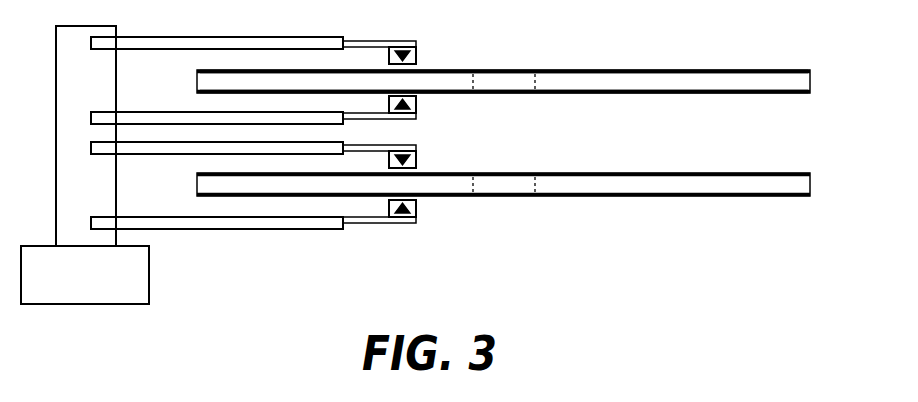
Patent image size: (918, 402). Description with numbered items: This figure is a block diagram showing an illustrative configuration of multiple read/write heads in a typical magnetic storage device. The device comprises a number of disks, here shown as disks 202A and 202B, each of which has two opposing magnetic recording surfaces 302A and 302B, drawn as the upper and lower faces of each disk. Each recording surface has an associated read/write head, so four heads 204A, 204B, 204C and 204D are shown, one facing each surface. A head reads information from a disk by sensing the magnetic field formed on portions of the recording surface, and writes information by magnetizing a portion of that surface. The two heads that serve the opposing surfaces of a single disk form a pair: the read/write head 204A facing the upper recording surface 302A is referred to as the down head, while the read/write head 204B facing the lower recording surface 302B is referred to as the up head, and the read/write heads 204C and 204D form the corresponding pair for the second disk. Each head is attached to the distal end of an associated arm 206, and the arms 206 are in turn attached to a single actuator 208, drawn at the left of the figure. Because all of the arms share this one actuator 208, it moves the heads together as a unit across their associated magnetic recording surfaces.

The disk 202A is at (533, 80).
The disk 202B is at (848, 175).
The read/write head 204A is at (416, 52).
The read/write head 204B is at (447, 110).
The read/write head 204C is at (447, 158).
The read/write head 204D is at (416, 212).
The arm 206 is at (178, 43).
The actuator 208 is at (97, 286).
The magnetic recording surface 302A is at (635, 70).
The magnetic recording surface 302B is at (647, 93).